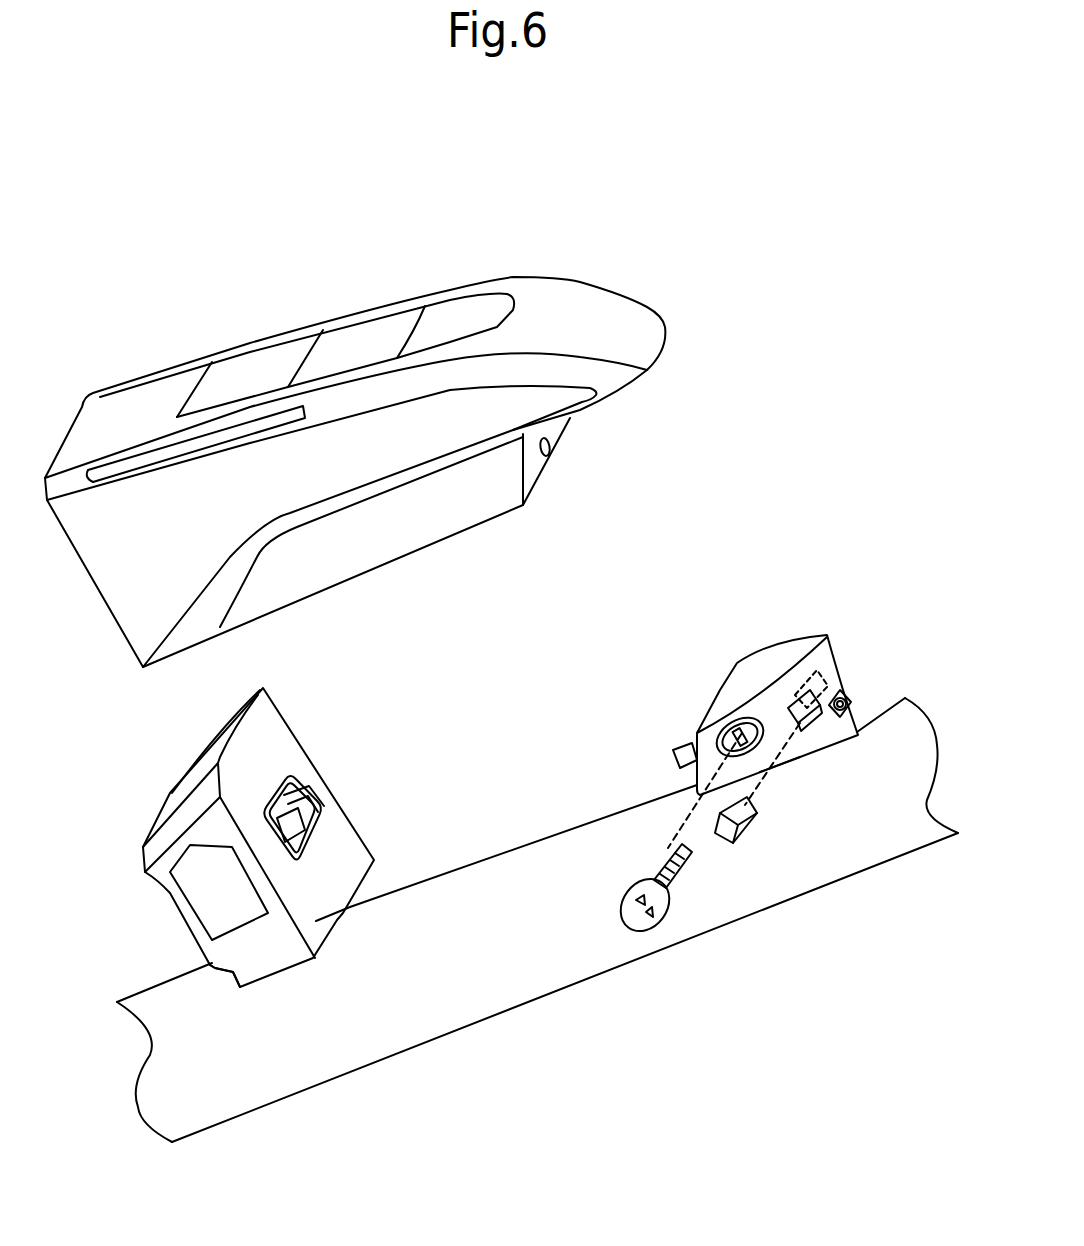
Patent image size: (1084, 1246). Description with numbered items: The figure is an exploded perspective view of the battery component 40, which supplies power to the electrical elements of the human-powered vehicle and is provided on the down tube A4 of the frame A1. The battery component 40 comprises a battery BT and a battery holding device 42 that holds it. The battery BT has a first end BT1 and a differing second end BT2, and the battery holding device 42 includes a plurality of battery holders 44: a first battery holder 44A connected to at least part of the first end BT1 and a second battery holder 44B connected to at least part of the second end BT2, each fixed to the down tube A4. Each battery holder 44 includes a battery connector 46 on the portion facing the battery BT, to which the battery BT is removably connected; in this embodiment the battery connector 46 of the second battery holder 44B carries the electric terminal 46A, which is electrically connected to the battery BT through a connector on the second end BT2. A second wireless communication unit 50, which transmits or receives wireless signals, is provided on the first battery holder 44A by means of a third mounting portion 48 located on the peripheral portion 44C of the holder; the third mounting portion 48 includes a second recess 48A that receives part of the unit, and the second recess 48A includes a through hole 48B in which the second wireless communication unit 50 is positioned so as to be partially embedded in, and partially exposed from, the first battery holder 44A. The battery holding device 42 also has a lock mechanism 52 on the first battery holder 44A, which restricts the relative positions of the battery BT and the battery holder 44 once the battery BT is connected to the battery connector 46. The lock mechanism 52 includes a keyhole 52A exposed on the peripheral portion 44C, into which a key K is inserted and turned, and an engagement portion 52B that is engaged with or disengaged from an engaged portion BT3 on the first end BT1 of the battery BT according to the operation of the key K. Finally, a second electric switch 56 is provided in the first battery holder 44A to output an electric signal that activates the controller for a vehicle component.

The battery component 40 is at (705, 162).
The battery BT is at (542, 230).
The first end BT1 is at (598, 290).
The second end BT2 is at (120, 384).
The engaged portion BT3 is at (550, 446).
The battery holding device 42 is at (797, 522).
The battery holder 44 is at (504, 770).
The first battery holder 44A is at (824, 618).
The second battery holder 44B is at (133, 773).
The peripheral portion 44C is at (262, 960).
The battery connector 46 is at (357, 843).
The electric terminal 46A is at (320, 798).
The third mounting portion 48 is at (783, 702).
The second recess 48A is at (811, 689).
The through hole 48B is at (810, 738).
The second wireless communication unit 50 is at (733, 852).
The lock mechanism 52 is at (710, 737).
The keyhole 52A is at (727, 717).
The engagement portion 52B is at (673, 757).
The second electric switch 56 is at (850, 690).
The key K is at (668, 857).
The down tube A4 is at (592, 978).
The frame A1 is at (537, 920).